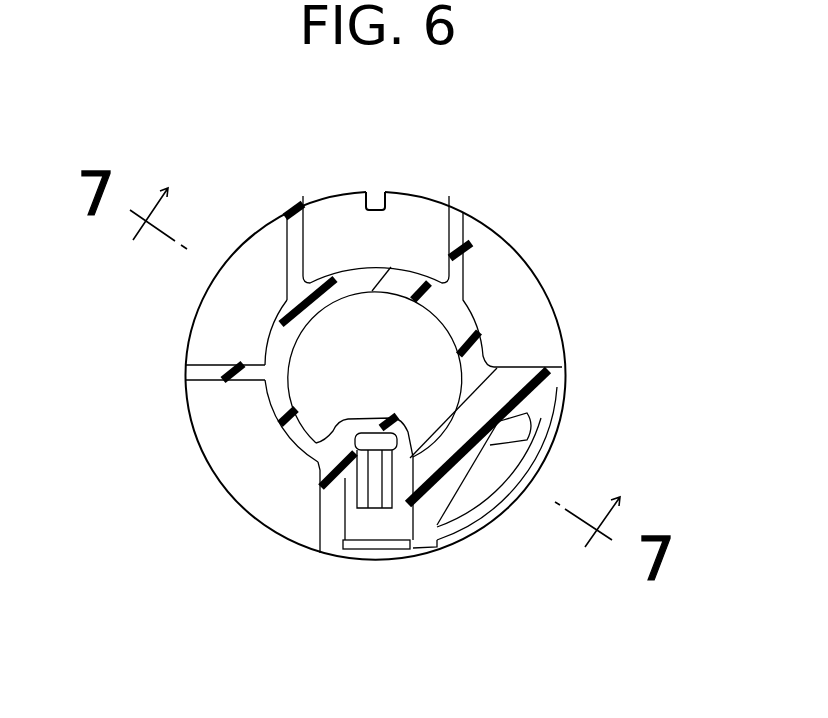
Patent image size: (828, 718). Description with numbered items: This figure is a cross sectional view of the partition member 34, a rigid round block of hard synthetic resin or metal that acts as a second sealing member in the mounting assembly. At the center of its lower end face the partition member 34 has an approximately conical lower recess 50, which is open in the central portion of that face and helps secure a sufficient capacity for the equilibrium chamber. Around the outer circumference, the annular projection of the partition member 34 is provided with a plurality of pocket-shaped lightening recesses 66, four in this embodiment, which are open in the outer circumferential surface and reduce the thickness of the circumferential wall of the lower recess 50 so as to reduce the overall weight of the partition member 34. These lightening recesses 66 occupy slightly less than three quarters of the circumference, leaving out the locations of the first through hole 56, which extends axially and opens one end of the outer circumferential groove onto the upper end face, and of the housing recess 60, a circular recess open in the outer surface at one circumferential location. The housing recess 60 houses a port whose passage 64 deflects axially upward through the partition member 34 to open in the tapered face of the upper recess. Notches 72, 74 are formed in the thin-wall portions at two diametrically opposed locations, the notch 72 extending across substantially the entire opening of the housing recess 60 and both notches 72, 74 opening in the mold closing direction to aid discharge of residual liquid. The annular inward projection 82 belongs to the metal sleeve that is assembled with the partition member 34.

The partition member 34 is at (238, 212).
The notch 72 is at (380, 195).
The lightening recesses 66 is at (304, 246).
The lower recess 50 is at (460, 357).
The first through hole 56 is at (495, 479).
The passage 64 is at (374, 512).
The housing recess 60 is at (348, 542).
The annular inward projection 82 is at (404, 530).
The notch 74 is at (408, 545).